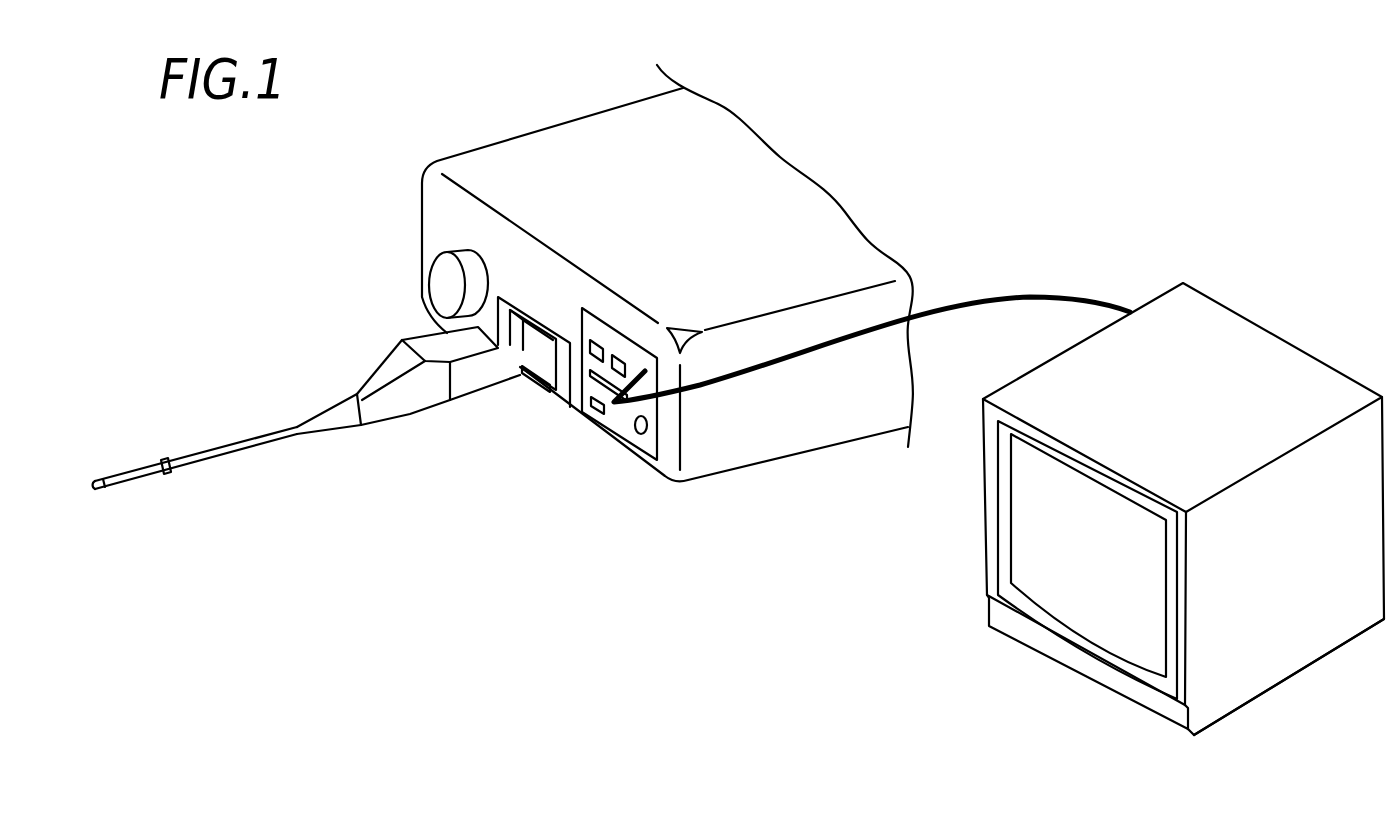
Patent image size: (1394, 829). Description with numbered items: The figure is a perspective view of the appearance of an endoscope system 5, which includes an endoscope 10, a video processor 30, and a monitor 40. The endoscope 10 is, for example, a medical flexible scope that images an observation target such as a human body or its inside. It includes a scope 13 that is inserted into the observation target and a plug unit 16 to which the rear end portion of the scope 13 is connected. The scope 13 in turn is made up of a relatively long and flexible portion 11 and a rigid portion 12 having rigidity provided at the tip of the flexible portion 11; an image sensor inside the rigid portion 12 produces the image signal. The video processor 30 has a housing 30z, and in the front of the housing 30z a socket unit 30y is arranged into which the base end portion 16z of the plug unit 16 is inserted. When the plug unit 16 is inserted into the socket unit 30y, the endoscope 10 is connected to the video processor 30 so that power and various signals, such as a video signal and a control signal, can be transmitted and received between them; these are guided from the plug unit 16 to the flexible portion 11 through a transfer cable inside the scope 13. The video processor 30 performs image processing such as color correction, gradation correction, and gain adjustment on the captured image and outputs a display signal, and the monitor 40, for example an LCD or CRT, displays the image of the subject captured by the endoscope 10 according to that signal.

The endoscope system 5 is at (1036, 101).
The endoscope 10 is at (266, 350).
The flexible portion 11 is at (213, 452).
The rigid portion 12 is at (93, 480).
The scope 13 is at (168, 457).
The plug unit 16 is at (395, 363).
The base end portion 16z is at (520, 372).
The video processor 30 is at (578, 140).
The socket unit 30y is at (548, 397).
The housing 30z is at (722, 458).
The monitor 40 is at (1255, 346).